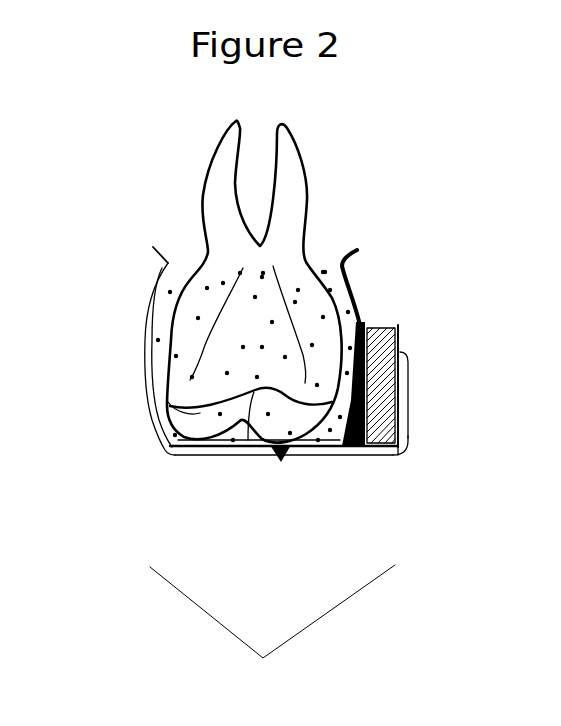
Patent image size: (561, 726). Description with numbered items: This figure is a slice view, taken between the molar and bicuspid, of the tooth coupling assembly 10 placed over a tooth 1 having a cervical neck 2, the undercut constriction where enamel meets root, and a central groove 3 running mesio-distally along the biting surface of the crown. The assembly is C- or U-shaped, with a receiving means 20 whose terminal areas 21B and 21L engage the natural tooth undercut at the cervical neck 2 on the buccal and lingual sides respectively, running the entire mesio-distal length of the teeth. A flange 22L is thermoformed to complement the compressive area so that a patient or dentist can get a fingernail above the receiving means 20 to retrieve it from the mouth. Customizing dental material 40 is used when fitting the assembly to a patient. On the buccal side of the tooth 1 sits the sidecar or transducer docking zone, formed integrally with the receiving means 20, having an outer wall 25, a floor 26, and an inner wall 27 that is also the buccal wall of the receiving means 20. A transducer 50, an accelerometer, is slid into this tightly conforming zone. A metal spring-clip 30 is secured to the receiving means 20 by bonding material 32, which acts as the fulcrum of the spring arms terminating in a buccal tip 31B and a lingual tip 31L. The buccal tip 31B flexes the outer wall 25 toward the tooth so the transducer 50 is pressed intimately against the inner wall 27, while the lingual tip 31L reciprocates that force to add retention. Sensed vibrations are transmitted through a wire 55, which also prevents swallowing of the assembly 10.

The tooth 1 is at (303, 150).
The cervical neck 2 is at (306, 248).
The central groove 3 is at (243, 458).
The tooth coupling assembly 10 is at (272, 627).
The receiving means 20 is at (192, 375).
The lingual engaging area of the receiving means 21L is at (175, 268).
The buccal engaging area of the receiving means 21B is at (348, 266).
The lingual flange 22L is at (166, 263).
The sidecar (outer wall of transducer docking zone) 25 is at (402, 334).
The floor 26 is at (373, 449).
The inner wall 27 is at (346, 446).
The metal spring-clip 30 is at (208, 457).
The lingual terminal tip of spring-wire retainer 31L is at (160, 268).
The buccal terminal tip of spring-wire retainer 31B is at (406, 354).
The bonding material 32 is at (281, 462).
The customizing dental material 40 is at (161, 404).
The transducer 50 is at (378, 328).
The wire 55 is at (388, 448).